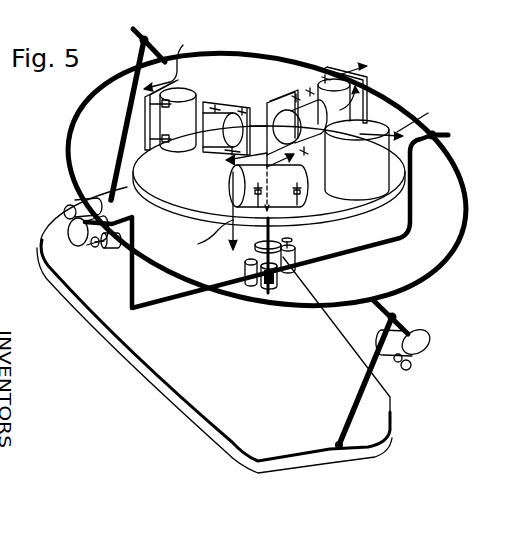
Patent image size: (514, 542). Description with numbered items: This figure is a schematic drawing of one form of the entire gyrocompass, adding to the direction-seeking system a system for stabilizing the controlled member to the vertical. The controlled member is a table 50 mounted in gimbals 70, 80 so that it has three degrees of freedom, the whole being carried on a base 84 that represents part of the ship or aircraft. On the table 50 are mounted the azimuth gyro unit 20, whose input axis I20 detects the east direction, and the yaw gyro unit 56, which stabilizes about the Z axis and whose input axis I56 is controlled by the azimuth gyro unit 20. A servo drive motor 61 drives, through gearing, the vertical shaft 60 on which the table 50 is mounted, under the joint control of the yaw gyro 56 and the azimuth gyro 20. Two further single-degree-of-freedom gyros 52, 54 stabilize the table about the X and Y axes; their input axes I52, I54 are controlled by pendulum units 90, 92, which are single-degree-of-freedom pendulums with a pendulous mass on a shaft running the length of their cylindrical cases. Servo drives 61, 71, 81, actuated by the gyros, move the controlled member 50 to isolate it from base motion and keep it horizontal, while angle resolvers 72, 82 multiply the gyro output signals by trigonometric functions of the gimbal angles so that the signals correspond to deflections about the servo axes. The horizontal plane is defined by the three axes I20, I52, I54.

The azimuth gyro unit 20 is at (365, 173).
The table 50 is at (184, 196).
The X-stabilizing gyro 52 is at (352, 94).
The Y-gyro 54 is at (186, 140).
The yaw gyro unit 56 is at (229, 178).
The vertical shaft 60 is at (274, 228).
The servo drive motor 61 is at (294, 259).
The gimbal 70 is at (152, 306).
The servo drive 71 is at (73, 204).
The angle resolver 72 is at (247, 274).
The gimbal 80 is at (70, 130).
The servo drive 81 is at (391, 366).
The angle resolver 82 is at (115, 242).
The base 84 is at (384, 410).
The pendulum unit 90 is at (283, 124).
The Y-pendulum 92 is at (212, 122).
The input axis of gyro 54 I54 is at (178, 54).
The input axis of gyro 52 I52 is at (367, 78).
The input axis of azimuth gyro 20 I20 is at (409, 117).
The input axis of yaw gyro 56 I56 is at (239, 211).